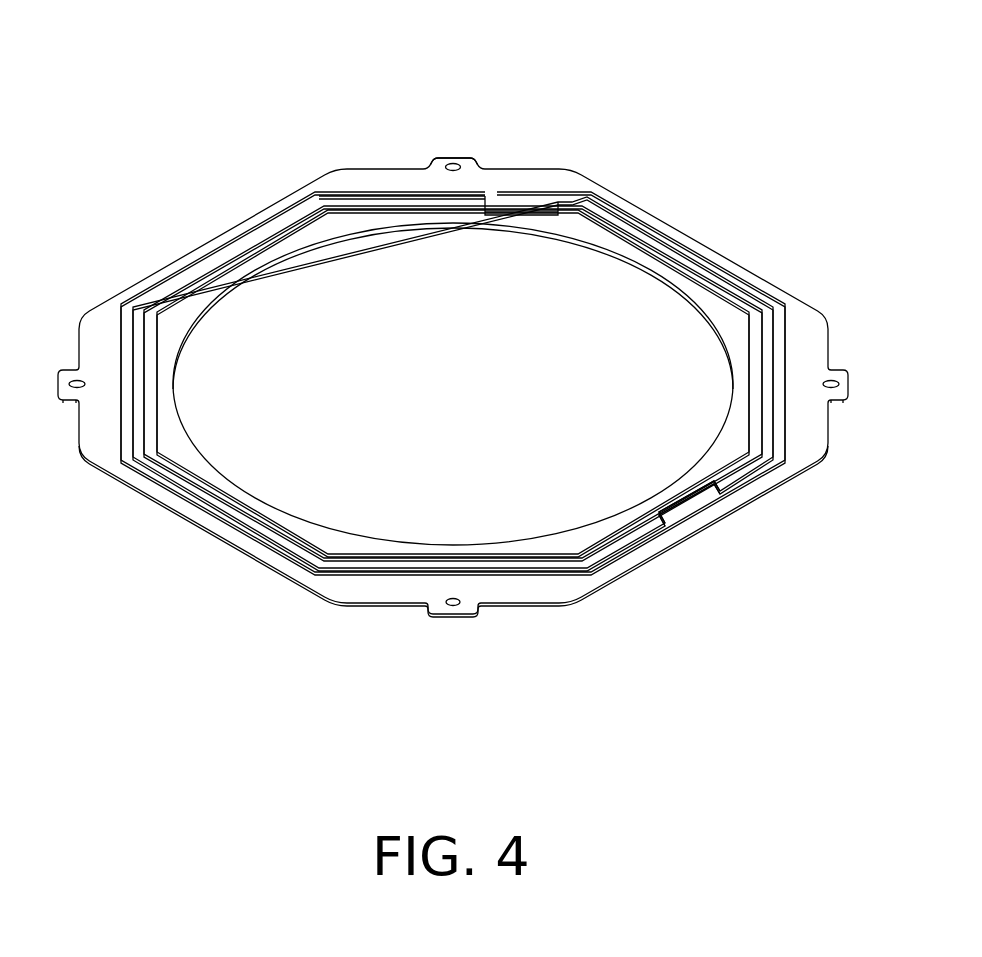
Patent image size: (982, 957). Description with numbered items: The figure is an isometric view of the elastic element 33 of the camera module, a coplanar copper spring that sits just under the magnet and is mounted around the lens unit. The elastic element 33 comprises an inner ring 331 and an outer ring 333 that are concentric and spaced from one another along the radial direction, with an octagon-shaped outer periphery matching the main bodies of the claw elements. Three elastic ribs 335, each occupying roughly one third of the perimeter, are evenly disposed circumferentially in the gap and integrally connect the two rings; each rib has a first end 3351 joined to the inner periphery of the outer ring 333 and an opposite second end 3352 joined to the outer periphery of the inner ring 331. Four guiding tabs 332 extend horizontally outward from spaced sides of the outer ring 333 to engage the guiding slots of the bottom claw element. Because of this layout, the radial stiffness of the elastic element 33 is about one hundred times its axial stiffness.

The elastic element 33 is at (452, 52).
The inner ring 331 is at (717, 310).
The guiding tabs 332 is at (441, 163).
The outer ring 333 is at (628, 208).
The elastic ribs 335 is at (486, 321).
The first end 3351 is at (721, 490).
The second end 3352 is at (563, 203).